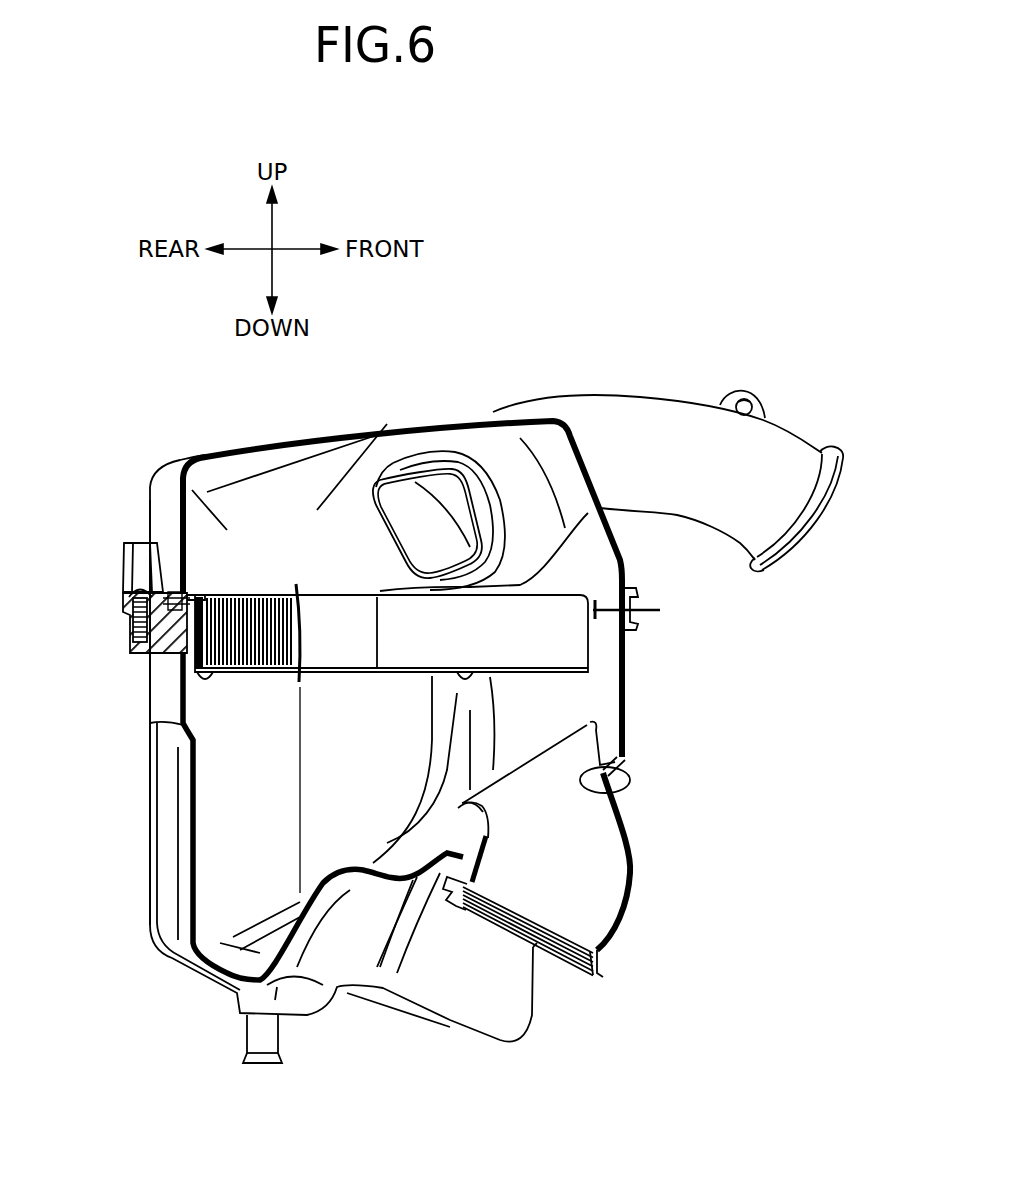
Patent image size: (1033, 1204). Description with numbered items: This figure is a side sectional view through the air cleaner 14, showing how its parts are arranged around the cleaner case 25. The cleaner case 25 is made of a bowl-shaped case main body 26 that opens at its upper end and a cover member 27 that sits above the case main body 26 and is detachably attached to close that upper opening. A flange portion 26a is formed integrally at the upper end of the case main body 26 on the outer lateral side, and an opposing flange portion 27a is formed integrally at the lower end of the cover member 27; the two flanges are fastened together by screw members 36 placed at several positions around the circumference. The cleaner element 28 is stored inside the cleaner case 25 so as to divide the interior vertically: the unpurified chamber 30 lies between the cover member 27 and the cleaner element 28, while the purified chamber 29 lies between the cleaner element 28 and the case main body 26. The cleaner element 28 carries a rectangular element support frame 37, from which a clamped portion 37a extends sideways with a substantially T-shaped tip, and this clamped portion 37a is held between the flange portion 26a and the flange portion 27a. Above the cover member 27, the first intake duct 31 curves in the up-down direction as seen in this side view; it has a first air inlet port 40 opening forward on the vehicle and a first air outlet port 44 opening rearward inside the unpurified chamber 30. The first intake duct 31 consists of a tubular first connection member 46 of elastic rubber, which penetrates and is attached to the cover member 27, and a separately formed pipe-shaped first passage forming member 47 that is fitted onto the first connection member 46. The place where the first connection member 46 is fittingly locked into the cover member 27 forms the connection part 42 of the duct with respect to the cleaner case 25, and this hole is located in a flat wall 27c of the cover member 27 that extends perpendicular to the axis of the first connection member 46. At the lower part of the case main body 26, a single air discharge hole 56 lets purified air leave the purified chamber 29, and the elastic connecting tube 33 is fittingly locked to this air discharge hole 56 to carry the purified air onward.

The air cleaner 14 is at (176, 974).
The cleaner case 25 is at (740, 622).
The case main body 26 is at (623, 705).
The flange portion 26a is at (130, 654).
The cover member 27 is at (628, 570).
The flange portion 27a is at (125, 602).
The flat wall 27c is at (362, 463).
The cleaner element 28 is at (270, 600).
The purified chamber 29 is at (346, 784).
The unpurified chamber 30 is at (272, 514).
The first intake duct 31 is at (672, 393).
The connecting tube 33 is at (627, 877).
The screw member 36 is at (143, 590).
The element support frame 37 is at (560, 612).
The clamped portion 37a is at (183, 600).
The first air inlet port 40 is at (812, 533).
The connection part 42 is at (424, 446).
The first air outlet port 44 is at (437, 565).
The first connection member 46 is at (485, 493).
The first passage forming member 47 is at (627, 420).
The air discharge hole 56 is at (628, 793).